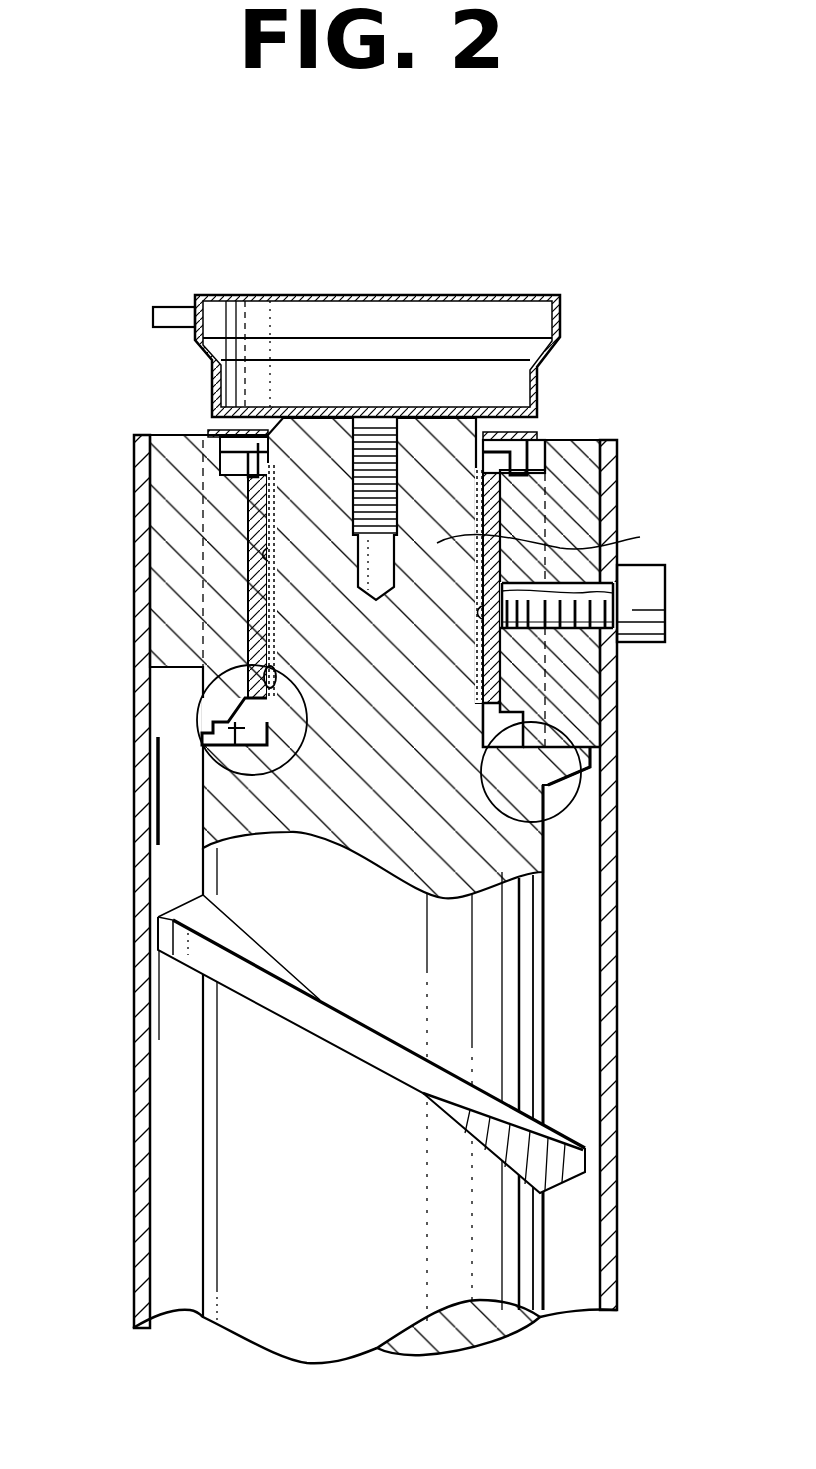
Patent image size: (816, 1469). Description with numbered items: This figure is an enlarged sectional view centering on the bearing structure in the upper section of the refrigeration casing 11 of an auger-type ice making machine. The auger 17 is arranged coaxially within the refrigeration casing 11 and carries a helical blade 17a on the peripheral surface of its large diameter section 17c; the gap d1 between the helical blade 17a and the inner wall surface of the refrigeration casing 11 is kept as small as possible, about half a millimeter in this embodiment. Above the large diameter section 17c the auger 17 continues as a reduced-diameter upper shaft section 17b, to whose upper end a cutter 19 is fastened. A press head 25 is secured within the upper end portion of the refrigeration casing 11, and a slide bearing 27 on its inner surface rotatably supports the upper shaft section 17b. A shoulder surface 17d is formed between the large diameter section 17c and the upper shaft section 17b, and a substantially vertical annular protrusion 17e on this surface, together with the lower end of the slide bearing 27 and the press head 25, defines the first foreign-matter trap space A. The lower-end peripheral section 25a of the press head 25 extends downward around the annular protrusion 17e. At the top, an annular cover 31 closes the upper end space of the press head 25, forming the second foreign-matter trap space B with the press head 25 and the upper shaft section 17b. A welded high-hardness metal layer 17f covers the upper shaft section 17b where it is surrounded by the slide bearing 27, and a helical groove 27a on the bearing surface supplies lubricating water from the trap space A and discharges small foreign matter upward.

The refrigeration casing 11 is at (617, 883).
The auger 17 is at (568, 1235).
The helical blade 17a is at (507, 1072).
The upper shaft section 17b is at (575, 535).
The large diameter section 17c is at (517, 962).
The shoulder surface 17d is at (250, 710).
The annular protrusion 17e is at (543, 808).
The metal layer 17f is at (250, 775).
The cutter 19 is at (538, 376).
The press head 25 is at (580, 468).
The lower-end peripheral section 25a is at (577, 720).
The slide bearing 27 is at (493, 665).
The helical groove 27a is at (613, 593).
The annular cover 31 is at (220, 432).
The first foreign-matter trap space A is at (230, 730).
The second foreign-matter trap space B is at (232, 463).
The gap d1 is at (197, 1017).